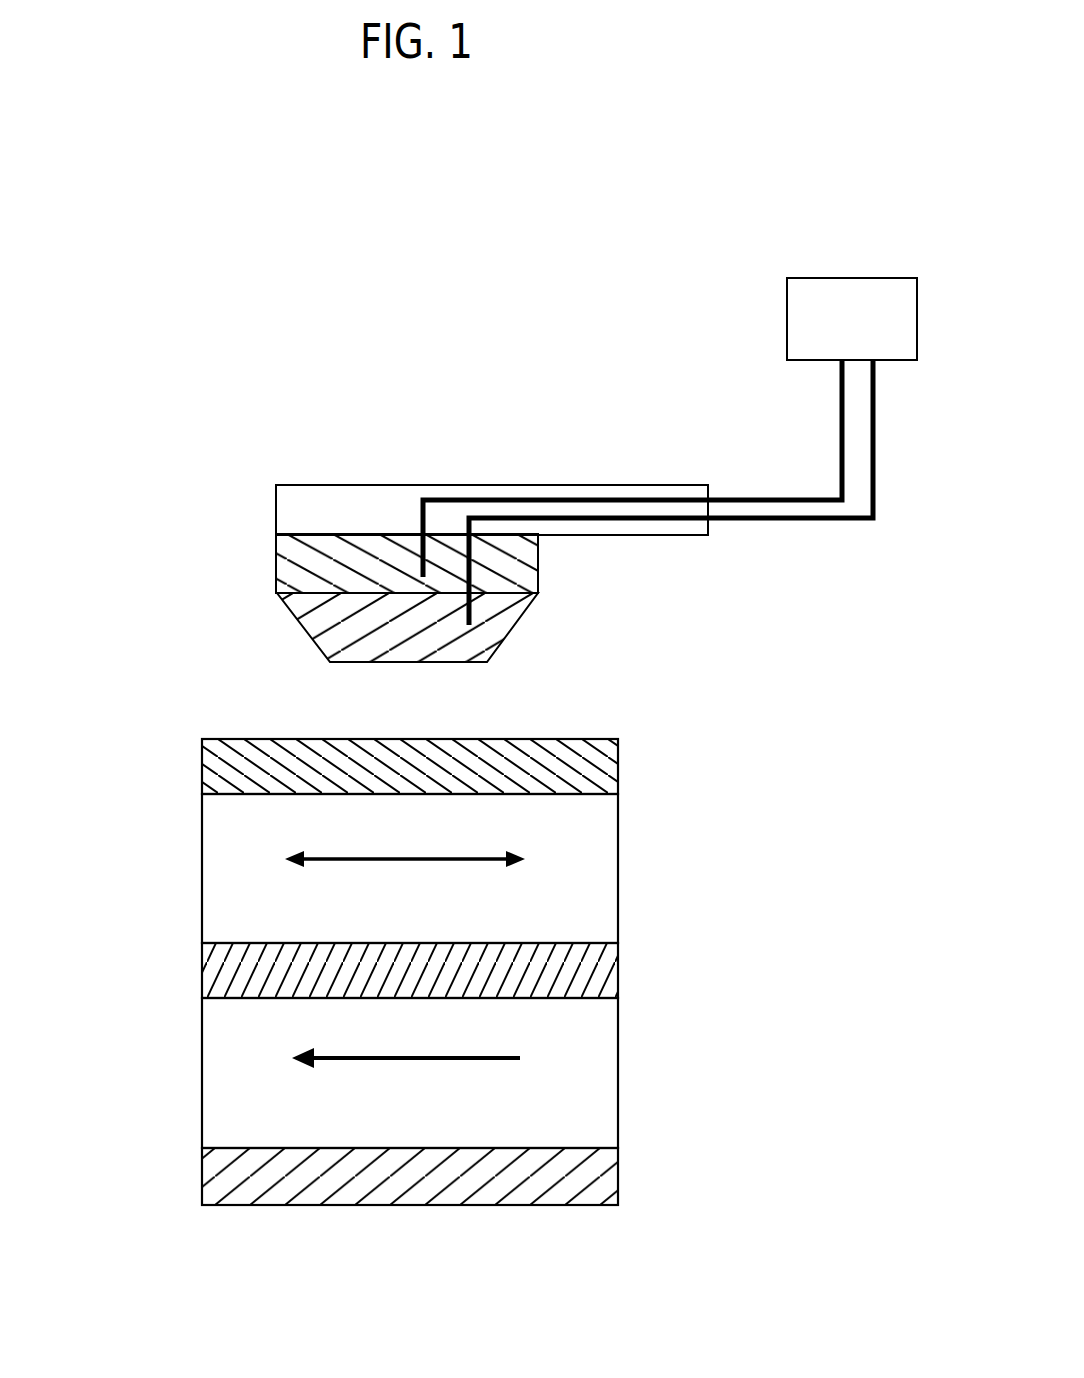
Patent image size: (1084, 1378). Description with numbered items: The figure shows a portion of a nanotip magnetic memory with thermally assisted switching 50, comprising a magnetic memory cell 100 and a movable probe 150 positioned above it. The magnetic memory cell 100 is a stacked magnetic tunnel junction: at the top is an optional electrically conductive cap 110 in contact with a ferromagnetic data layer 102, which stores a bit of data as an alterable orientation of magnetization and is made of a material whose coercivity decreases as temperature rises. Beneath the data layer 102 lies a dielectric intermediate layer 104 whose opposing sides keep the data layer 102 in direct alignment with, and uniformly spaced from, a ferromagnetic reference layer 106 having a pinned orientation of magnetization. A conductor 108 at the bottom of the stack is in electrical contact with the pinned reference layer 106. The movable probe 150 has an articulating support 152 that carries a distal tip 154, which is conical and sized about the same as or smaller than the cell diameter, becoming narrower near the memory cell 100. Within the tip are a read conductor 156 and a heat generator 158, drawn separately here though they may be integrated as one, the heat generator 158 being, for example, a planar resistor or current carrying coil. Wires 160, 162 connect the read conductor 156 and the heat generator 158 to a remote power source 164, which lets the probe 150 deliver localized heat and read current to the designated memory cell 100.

The nanotip magnetic memory with thermally assisted switching 50 is at (120, 462).
The magnetic memory cell 100 is at (192, 730).
The ferromagnetic data layer 102 is at (593, 885).
The intermediate layer 104 is at (595, 975).
The ferromagnetic reference layer 106 is at (590, 1088).
The conductor 108 is at (603, 1185).
The electrically conductive cap 110 is at (600, 765).
The movable probe 150 is at (343, 476).
The articulating support 152 is at (503, 487).
The distal tip 154 is at (268, 592).
The read conductor 156 is at (485, 645).
The heat generator 158 is at (535, 583).
The wire 160 is at (775, 522).
The wire 162 is at (842, 418).
The remote power source 164 is at (874, 338).